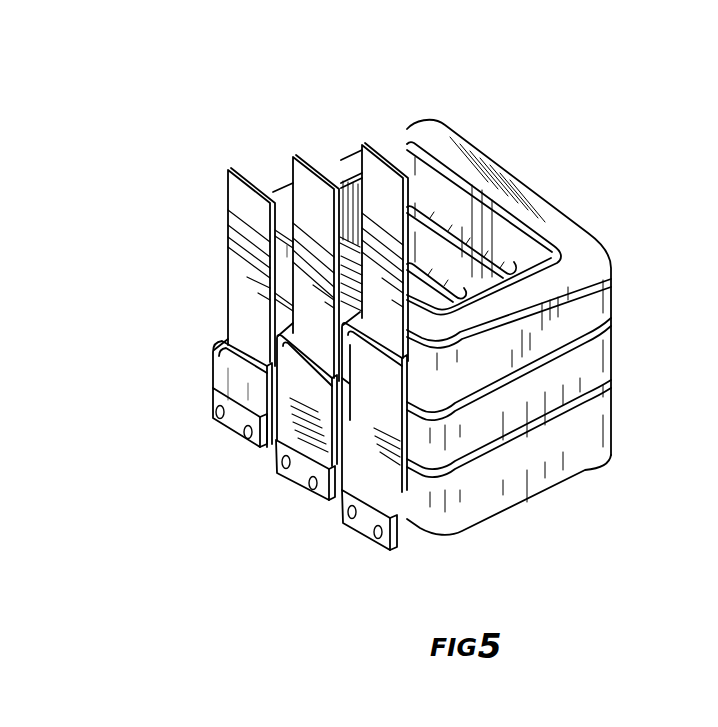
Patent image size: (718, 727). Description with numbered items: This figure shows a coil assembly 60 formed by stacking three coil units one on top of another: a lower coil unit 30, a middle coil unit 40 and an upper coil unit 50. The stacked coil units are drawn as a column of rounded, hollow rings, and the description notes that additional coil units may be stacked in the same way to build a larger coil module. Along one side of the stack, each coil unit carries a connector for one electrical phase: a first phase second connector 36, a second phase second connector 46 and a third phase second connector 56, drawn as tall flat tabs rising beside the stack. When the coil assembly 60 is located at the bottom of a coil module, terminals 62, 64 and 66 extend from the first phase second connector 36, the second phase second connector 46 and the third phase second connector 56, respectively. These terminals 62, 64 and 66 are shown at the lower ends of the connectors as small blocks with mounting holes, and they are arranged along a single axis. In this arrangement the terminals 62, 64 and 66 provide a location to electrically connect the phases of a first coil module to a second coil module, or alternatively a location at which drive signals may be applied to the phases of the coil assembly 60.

The coil unit 30 is at (577, 463).
The first phase second connector 36 is at (222, 372).
The coil unit 40 is at (575, 390).
The second phase second connector 46 is at (300, 370).
The coil unit 50 is at (578, 325).
The third phase second connector 56 is at (387, 383).
The coil assembly 60 is at (387, 324).
The terminal 62 is at (220, 413).
The terminal 64 is at (292, 477).
The terminal 66 is at (373, 537).